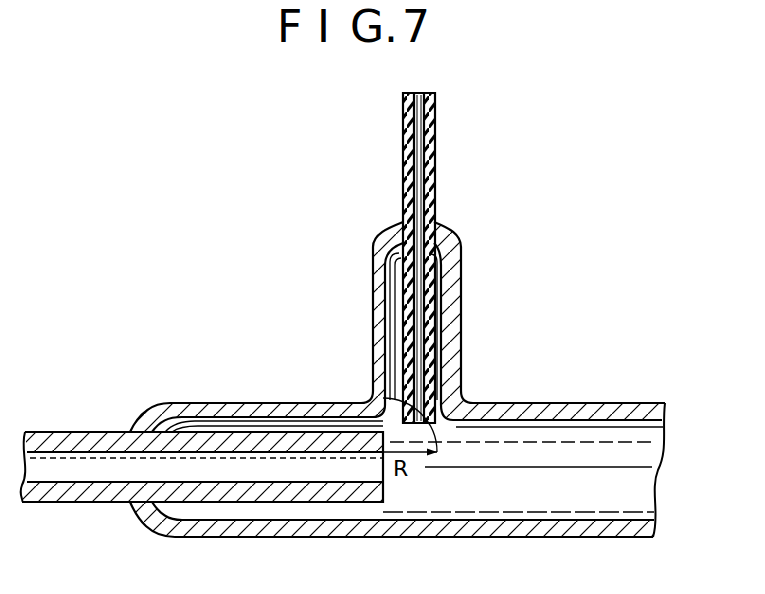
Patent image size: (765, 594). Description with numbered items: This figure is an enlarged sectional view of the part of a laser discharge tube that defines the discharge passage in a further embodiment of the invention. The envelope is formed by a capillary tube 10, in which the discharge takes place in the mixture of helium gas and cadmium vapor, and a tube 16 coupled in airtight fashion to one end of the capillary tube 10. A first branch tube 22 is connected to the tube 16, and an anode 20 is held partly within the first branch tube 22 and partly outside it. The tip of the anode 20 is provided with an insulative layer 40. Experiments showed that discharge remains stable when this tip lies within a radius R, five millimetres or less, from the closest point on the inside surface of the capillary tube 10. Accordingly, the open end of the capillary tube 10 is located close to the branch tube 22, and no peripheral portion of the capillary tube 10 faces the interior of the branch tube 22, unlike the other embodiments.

The capillary tube 10 is at (67, 494).
The tube 16 is at (586, 404).
The anode 20 is at (422, 152).
The first branch tube 22 is at (456, 286).
The insulative layer 40 is at (421, 194).